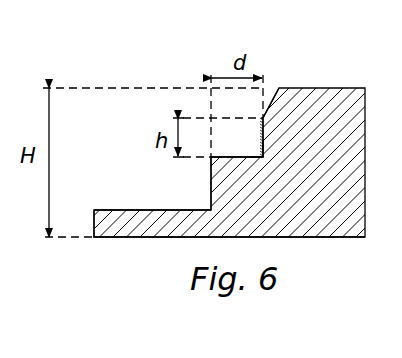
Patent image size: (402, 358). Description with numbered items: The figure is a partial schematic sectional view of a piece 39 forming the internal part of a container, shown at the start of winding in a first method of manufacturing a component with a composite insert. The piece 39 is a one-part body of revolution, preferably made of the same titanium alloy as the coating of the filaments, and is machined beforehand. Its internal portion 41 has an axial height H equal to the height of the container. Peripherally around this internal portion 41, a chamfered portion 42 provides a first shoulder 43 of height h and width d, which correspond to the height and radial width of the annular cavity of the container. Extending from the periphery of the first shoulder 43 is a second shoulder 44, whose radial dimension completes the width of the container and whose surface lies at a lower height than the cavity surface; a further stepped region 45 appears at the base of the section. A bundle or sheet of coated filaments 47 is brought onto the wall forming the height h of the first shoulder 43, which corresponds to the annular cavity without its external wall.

The piece forming an internal part of a container 39 is at (170, 82).
The internal portion 41 is at (318, 104).
The chamfered portion 42 is at (272, 100).
The first shoulder 43 is at (253, 148).
The second shoulder 44 is at (200, 199).
The base plate 45 is at (123, 238).
The bundle or sheet of coated filaments 47 is at (258, 128).